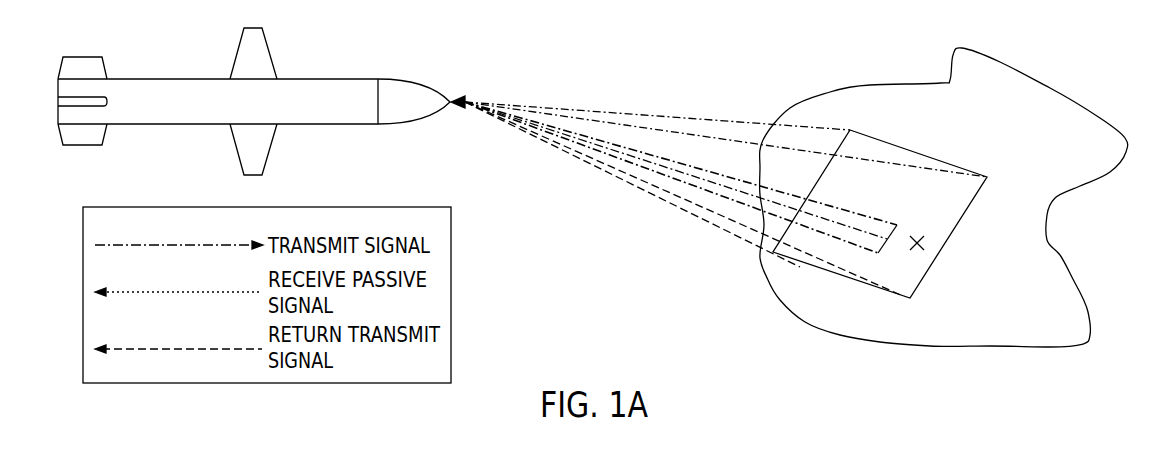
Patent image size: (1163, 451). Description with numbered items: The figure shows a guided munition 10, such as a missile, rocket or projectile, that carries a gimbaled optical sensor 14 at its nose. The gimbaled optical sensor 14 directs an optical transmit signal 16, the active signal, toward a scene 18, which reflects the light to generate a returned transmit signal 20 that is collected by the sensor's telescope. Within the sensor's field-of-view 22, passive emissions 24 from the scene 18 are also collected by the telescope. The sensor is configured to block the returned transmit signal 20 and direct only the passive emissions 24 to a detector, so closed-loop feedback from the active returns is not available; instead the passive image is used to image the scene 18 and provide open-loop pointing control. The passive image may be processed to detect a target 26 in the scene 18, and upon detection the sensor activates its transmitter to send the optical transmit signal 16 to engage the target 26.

The guided munition 10 is at (193, 79).
The gimbaled optical sensor 14 is at (412, 80).
The optical transmit signal 16 is at (846, 206).
The scene 18 is at (890, 86).
The returned transmit signal 20 is at (737, 192).
The field-of-view 22 is at (920, 154).
The passive emissions 24 is at (650, 115).
The target 26 is at (925, 240).